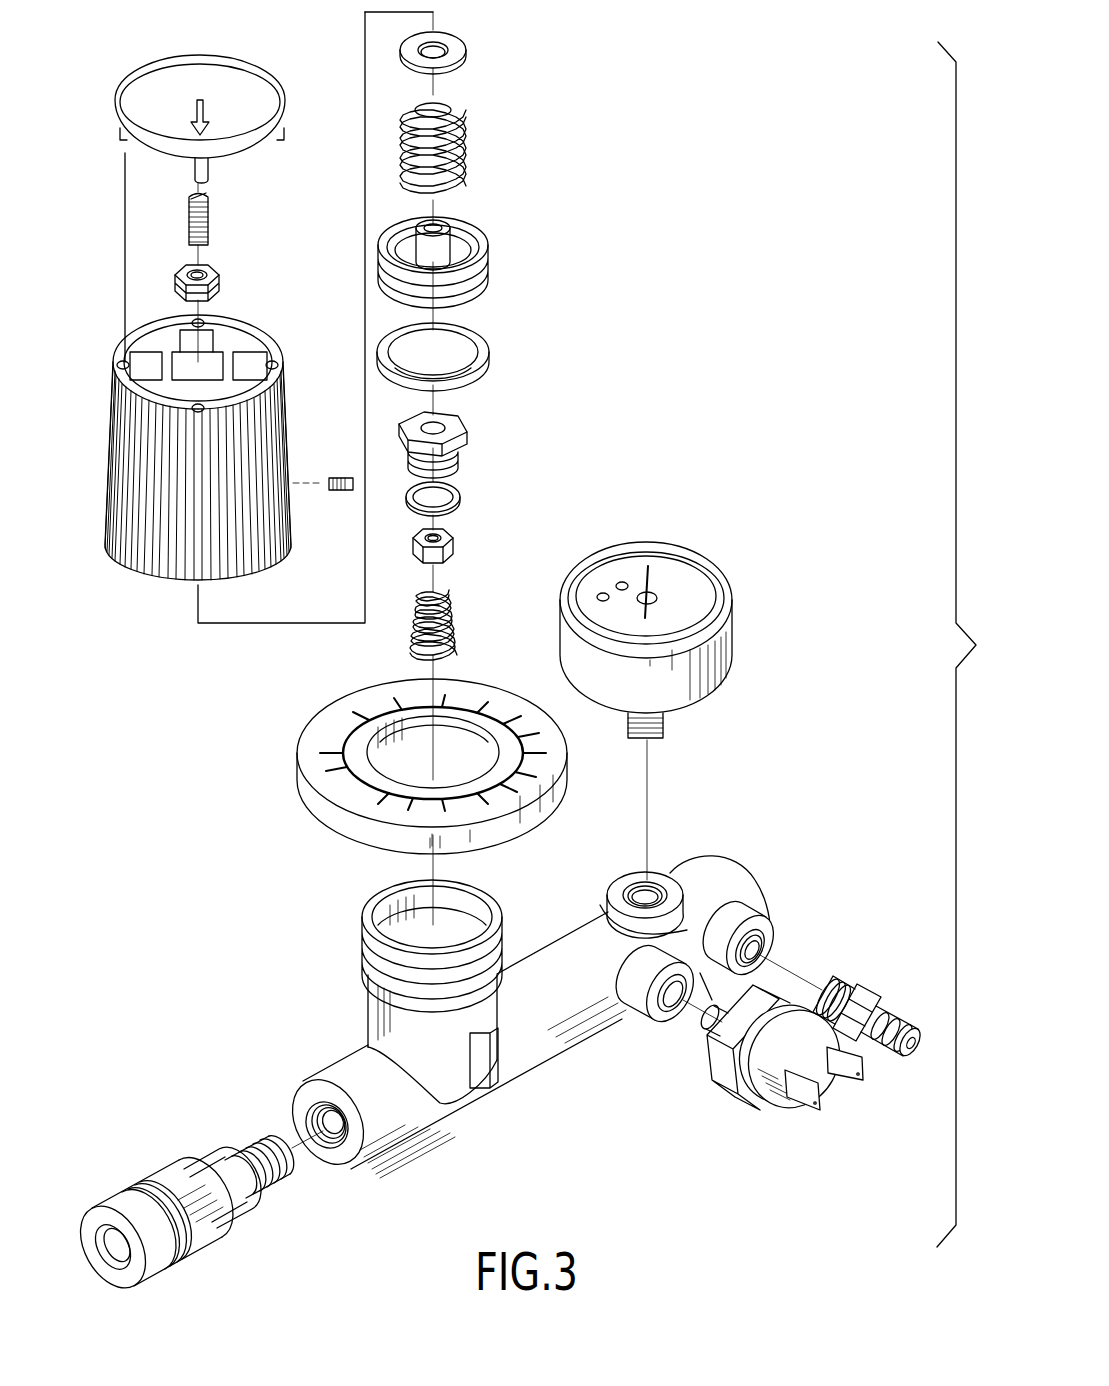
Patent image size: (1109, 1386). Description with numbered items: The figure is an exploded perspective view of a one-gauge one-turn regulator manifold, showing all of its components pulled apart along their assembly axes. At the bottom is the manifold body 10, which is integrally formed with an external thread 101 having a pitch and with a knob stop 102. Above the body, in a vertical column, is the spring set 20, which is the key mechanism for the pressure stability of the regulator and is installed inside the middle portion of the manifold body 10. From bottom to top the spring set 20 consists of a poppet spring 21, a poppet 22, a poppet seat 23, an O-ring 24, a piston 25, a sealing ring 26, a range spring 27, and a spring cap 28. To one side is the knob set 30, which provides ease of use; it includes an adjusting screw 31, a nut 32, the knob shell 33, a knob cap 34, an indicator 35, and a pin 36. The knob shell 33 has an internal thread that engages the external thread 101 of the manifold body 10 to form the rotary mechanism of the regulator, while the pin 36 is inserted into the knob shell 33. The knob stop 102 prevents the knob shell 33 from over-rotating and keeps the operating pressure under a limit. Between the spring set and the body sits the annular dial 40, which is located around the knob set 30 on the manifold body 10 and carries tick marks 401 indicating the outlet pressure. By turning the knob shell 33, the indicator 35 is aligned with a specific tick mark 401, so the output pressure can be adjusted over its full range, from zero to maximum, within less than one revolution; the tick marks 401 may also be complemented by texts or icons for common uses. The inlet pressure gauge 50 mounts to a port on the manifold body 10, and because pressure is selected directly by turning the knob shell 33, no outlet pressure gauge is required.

The manifold body 10 is at (495, 1077).
The external thread 101 is at (368, 955).
The knob stop 102 is at (485, 1058).
The spring set 20 is at (622, 285).
The poppet spring 21 is at (448, 632).
The poppet 22 is at (448, 546).
The poppet seat 23 is at (452, 428).
The O-ring 24 is at (458, 500).
The piston 25 is at (478, 250).
The sealing ring 26 is at (483, 358).
The range spring 27 is at (455, 158).
The spring cap 28 is at (460, 48).
The knob set 30 is at (138, 596).
The adjusting screw 31 is at (210, 220).
The nut 32 is at (212, 277).
The knob shell 33 is at (243, 543).
The knob cap 34 is at (233, 73).
The indicator 35 is at (212, 110).
The pin 36 is at (341, 476).
The annular dial 40 is at (405, 772).
The tick marks 401 is at (328, 750).
The inlet pressure gauge 50 is at (750, 587).